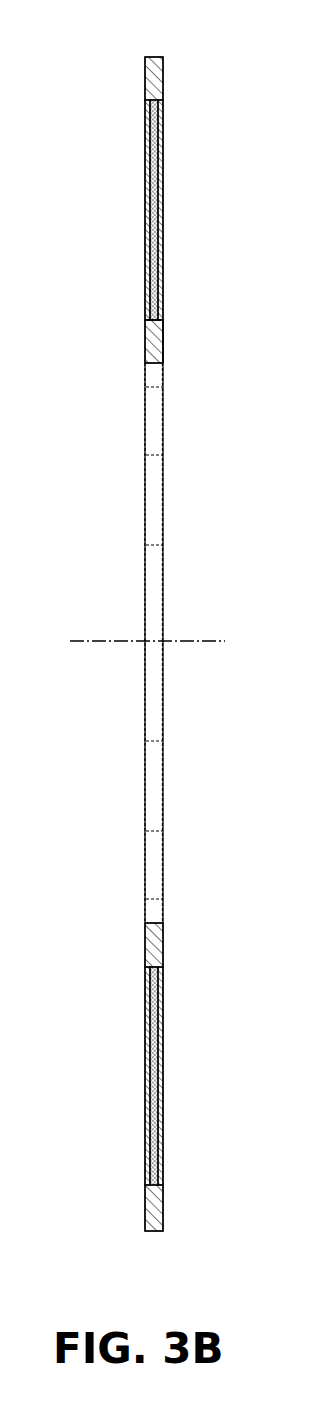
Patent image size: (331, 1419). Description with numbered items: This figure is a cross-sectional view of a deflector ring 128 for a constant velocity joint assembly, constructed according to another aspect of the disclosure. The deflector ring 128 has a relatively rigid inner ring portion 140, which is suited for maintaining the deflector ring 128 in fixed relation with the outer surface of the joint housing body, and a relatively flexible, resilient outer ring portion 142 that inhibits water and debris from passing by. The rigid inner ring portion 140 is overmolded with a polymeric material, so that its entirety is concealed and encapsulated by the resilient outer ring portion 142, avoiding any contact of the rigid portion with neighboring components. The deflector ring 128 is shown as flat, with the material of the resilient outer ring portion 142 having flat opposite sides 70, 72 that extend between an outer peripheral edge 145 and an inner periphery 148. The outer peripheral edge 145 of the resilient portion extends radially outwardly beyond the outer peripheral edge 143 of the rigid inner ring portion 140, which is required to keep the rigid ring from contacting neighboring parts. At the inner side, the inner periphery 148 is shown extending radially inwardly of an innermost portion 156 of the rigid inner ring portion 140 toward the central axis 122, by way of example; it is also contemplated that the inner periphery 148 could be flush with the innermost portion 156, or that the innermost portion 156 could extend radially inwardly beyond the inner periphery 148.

The deflector ring 128 is at (165, 617).
The outer peripheral edge of the flexible, resilient outer ring portion 145 is at (156, 55).
The outer peripheral edge of the rigid inner ring portion 143 is at (150, 88).
The outer ring portion 142 is at (160, 82).
The inner ring portion 140 is at (155, 205).
The innermost portion of the rigid inner ring portion 156 is at (145, 325).
The flat opposite side 70 is at (146, 338).
The flat opposite side 72 is at (163, 340).
The inner periphery 148 is at (153, 364).
The central axis 122 is at (183, 641).